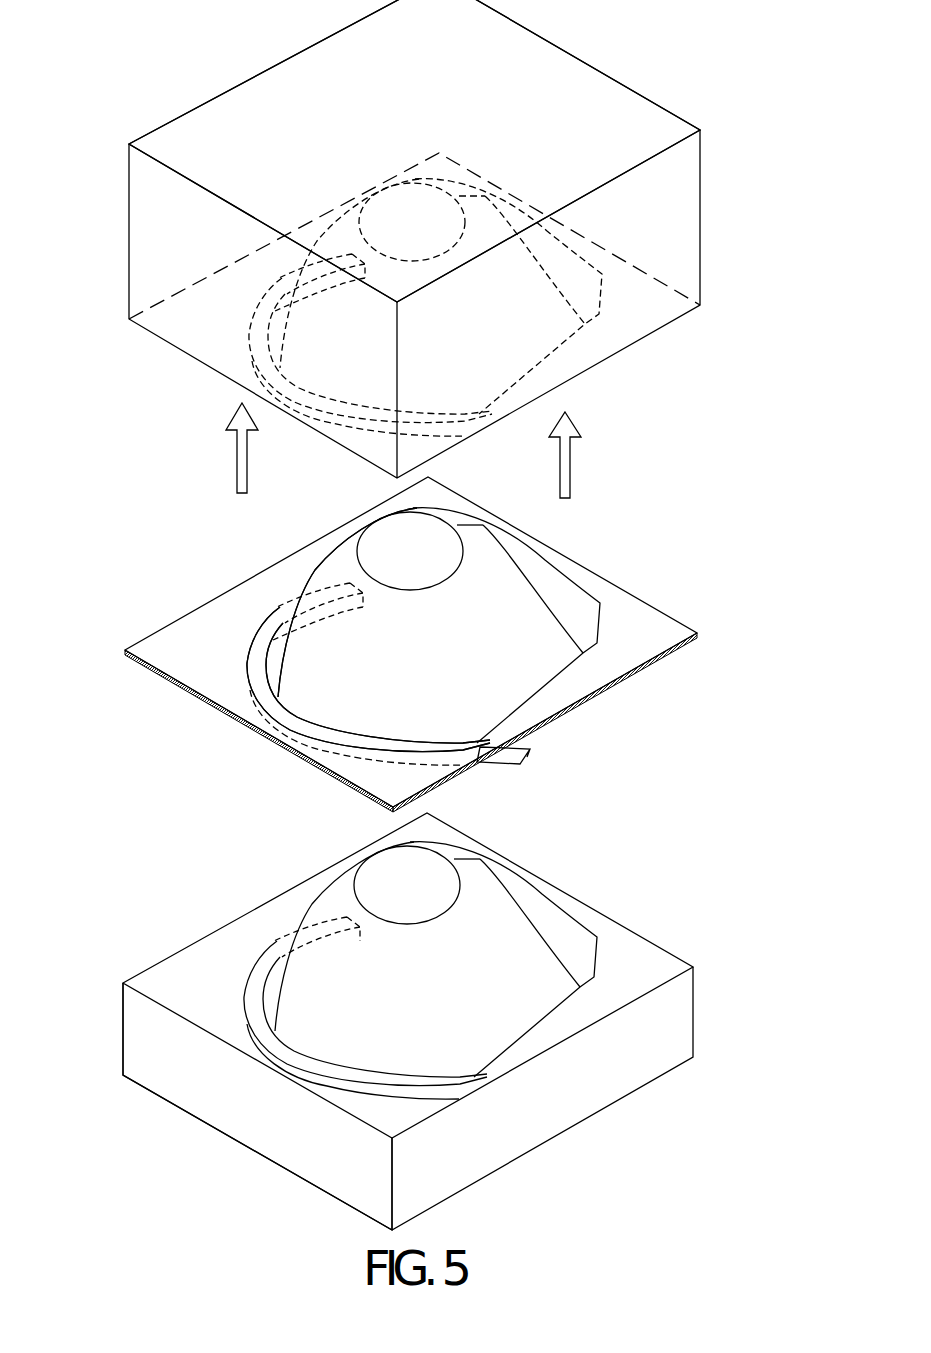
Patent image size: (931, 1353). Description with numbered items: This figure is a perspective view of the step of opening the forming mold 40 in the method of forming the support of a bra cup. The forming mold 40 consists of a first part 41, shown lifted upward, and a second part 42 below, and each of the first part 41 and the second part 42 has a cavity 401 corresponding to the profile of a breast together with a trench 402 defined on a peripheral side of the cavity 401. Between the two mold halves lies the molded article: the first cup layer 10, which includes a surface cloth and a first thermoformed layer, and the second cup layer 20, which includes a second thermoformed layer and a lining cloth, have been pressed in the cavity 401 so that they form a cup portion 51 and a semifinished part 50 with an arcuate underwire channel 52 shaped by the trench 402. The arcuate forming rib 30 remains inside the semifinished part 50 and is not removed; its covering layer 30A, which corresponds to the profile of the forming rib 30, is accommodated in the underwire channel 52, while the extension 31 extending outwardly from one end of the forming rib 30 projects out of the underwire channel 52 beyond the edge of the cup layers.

The first cup layer 10 is at (162, 643).
The second cup layer 20 is at (192, 693).
The forming rib 30 is at (272, 712).
The covering layer 30A is at (267, 618).
The extension 31 is at (517, 762).
The forming mold 40 is at (712, 249).
The first part 41 is at (600, 90).
The second part 42 is at (187, 1100).
The cavity 401 is at (393, 208).
The trench 402 is at (260, 345).
The semifinished part 50 is at (607, 570).
The cup portion 51 is at (328, 565).
The arcuate underwire channel 52 is at (368, 679).